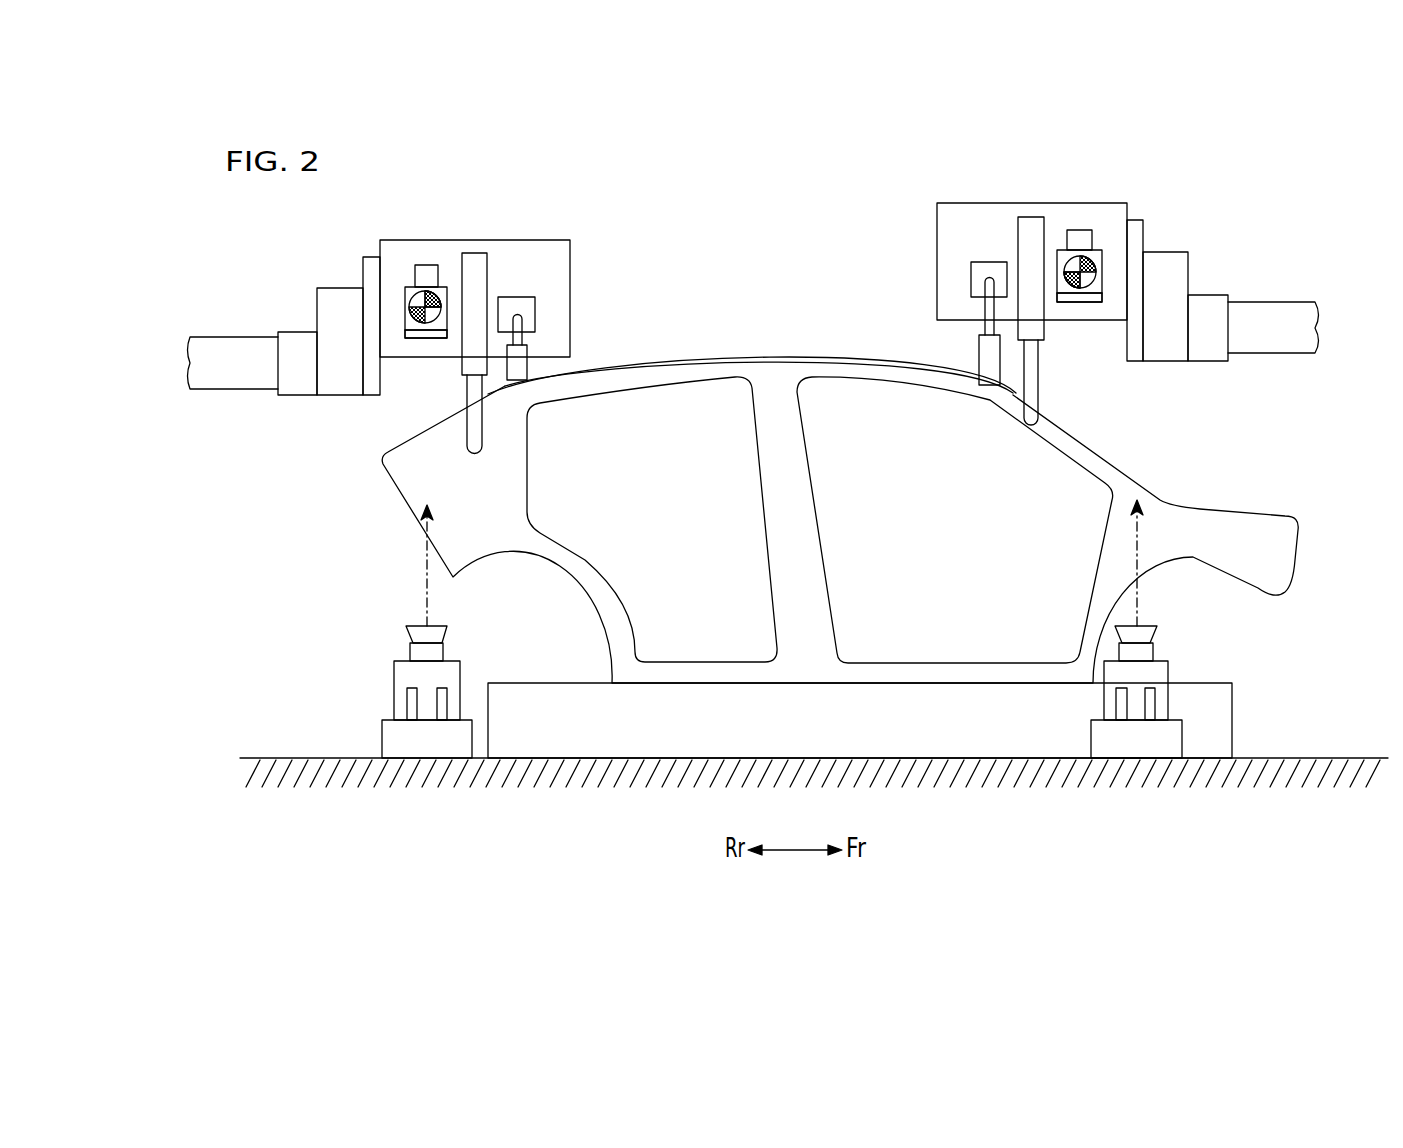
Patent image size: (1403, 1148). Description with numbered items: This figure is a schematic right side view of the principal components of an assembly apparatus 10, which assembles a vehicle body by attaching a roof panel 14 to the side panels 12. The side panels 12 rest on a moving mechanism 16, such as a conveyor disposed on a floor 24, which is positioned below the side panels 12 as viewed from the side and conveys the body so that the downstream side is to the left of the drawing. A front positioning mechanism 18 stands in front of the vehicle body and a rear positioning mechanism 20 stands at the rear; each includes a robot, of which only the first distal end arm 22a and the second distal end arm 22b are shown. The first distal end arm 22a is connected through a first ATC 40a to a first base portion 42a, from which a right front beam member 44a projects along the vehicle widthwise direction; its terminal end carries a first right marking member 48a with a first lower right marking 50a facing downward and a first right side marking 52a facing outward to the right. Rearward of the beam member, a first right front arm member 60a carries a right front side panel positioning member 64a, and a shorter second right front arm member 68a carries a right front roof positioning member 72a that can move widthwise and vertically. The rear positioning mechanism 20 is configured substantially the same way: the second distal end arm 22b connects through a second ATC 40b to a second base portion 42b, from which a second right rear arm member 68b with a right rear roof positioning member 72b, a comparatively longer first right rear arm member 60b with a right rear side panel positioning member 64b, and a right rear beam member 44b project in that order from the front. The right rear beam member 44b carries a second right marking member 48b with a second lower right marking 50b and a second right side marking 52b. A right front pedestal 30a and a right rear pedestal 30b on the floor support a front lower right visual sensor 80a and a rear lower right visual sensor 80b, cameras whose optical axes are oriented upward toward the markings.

The assembly apparatus 10 is at (869, 197).
The side panel 12 is at (1207, 518).
The roof panel 14 is at (784, 360).
The moving mechanism 16 is at (543, 692).
The front positioning mechanism 18 is at (1254, 228).
The rear positioning mechanism 20 is at (602, 244).
The first distal end arm 22a is at (1277, 313).
The second distal end arm 22b is at (228, 350).
The floor 24 is at (1317, 757).
The right front pedestal 30a is at (1102, 742).
The right rear pedestal 30b is at (393, 742).
The first ATC 40a is at (1168, 260).
The second ATC 40b is at (338, 295).
The first base portion 42a is at (960, 203).
The second base portion 42b is at (547, 240).
The right front beam member 44a is at (1082, 237).
The right rear beam member 44b is at (427, 272).
The first right marking member 48a is at (1140, 388).
The second right marking member 48b is at (318, 413).
The first lower right marking 50a is at (1070, 303).
The second lower right marking 50b is at (420, 340).
The first right side marking 52a is at (1088, 283).
The second right side marking 52b is at (413, 299).
The first right front arm member 60a is at (1030, 223).
The first right rear arm member 60b is at (475, 260).
The right front side panel positioning member 64a is at (1030, 405).
The right rear side panel positioning member 64b is at (472, 450).
The second right front arm member 68a is at (990, 268).
The second right rear arm member 68b is at (517, 297).
The right front roof positioning member 72a is at (975, 348).
The right rear roof positioning member 72b is at (528, 388).
The front lower right visual sensor 80a is at (1143, 632).
The rear lower right visual sensor 80b is at (415, 632).